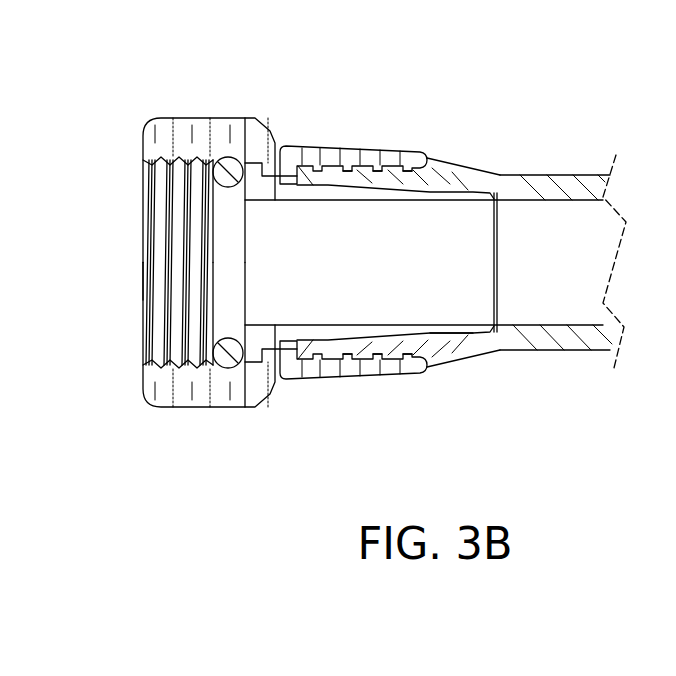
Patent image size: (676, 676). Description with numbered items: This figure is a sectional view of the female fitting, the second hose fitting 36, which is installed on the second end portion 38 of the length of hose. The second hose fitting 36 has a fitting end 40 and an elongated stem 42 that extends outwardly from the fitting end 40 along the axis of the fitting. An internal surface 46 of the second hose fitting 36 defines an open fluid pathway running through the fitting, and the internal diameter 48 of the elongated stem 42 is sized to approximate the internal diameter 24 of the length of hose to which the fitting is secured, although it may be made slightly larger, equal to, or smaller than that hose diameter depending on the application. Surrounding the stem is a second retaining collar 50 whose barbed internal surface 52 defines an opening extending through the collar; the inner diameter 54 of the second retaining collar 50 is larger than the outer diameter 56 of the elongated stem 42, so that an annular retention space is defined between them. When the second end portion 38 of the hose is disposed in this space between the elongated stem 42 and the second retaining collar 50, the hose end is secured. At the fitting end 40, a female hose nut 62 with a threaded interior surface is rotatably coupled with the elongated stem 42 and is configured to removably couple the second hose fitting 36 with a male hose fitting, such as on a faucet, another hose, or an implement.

The internal diameter of the length of hose 24 is at (561, 202).
The second hose fitting 36 is at (350, 134).
The second end portion of the length of hose 38 is at (471, 170).
The fitting end 40 is at (235, 409).
The elongated stem 42 is at (444, 337).
The internal surface 46 is at (279, 238).
The internal diameter of the elongated stem 48 is at (462, 202).
The second retaining collar 50 is at (320, 150).
The barbed internal surface 52 is at (379, 360).
The inner diameter of the second retaining collar 54 is at (349, 172).
The outer diameter of the elongated stem 56 is at (402, 188).
The female hose nut 62 is at (203, 134).